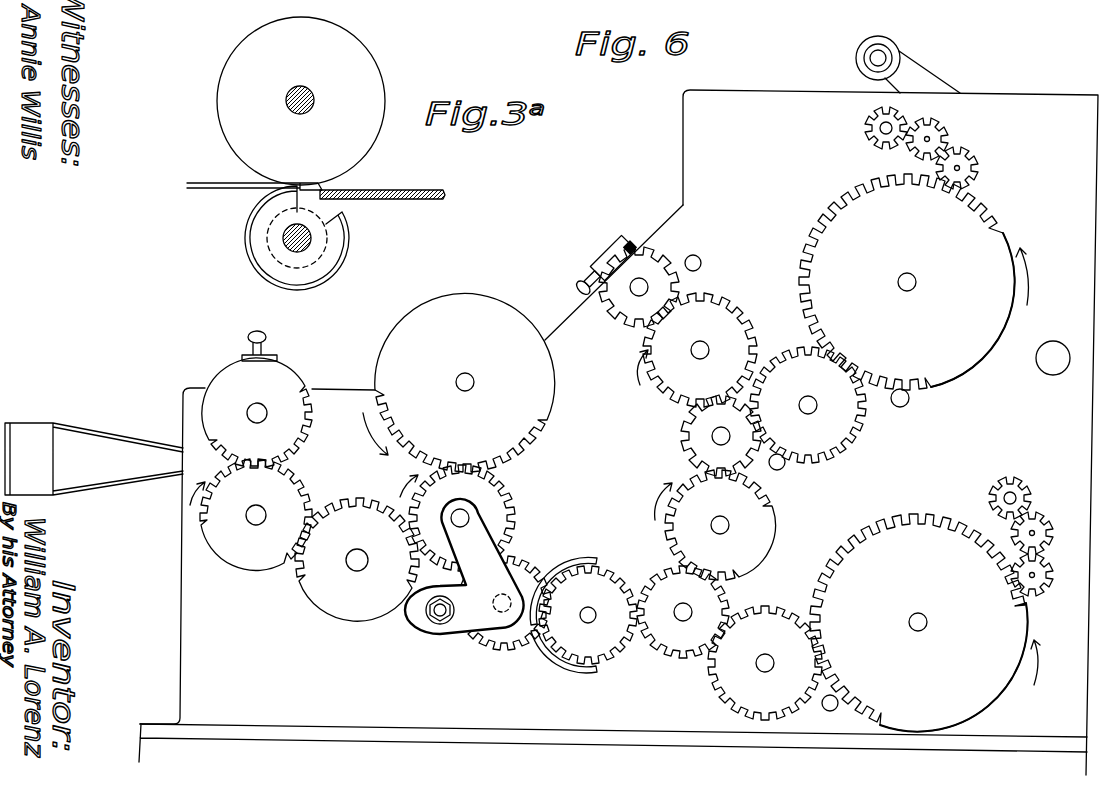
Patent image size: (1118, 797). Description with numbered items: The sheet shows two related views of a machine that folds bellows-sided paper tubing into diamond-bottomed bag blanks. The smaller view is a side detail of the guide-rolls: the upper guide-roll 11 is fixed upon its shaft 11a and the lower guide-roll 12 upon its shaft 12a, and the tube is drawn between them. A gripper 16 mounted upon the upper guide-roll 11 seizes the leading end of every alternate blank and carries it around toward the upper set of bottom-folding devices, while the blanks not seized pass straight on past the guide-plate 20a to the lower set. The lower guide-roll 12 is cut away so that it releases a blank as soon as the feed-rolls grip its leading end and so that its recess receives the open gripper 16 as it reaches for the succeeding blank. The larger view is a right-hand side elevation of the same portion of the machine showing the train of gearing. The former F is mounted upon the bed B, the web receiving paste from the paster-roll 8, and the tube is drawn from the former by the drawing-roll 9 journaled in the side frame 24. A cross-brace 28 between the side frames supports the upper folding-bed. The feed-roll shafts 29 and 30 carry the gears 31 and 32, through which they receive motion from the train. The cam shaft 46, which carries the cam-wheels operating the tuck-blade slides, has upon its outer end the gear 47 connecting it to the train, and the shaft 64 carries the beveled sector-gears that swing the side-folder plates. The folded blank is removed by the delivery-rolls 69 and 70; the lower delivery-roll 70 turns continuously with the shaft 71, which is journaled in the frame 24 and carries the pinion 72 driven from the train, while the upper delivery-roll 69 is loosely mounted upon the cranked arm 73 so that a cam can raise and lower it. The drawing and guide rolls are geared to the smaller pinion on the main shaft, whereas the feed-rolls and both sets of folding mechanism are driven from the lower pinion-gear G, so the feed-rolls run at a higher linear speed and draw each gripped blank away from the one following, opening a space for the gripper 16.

In FIG. 3A, the upper guide-roll 11 is at (301, 101).
In FIG. 3A, the guide-roll shaft 11a is at (314, 98).
In FIG. 6, the guide-roll shaft 11a is at (471, 380).
In FIG. 3A, the lower guide-roll 12 is at (262, 263).
In FIG. 3A, the guide-roll shaft 12a is at (292, 237).
In FIG. 6, the guide-roll shaft 12a is at (469, 516).
In FIG. 3A, the gripper 16 is at (318, 185).
In FIG. 3A, the guide-plate 20a is at (396, 198).
In FIG. 6, the side frame 24 is at (619, 432).
In FIG. 6, the cross-brace 28 is at (1049, 372).
In FIG. 6, the feed-roll shaft 29 is at (722, 419).
In FIG. 6, the feed-roll shaft 30 is at (728, 509).
In FIG. 6, the gear 31 is at (681, 373).
In FIG. 6, the gear 32 is at (709, 436).
In FIG. 6, the cam shaft 46 is at (935, 622).
In FIG. 6, the gear 47 is at (910, 693).
In FIG. 6, the shaft 64 is at (778, 470).
In FIG. 6, the upper delivery-roll 69 is at (895, 50).
In FIG. 6, the lower delivery-roll 70 is at (992, 498).
In FIG. 6, the delivery-roll shaft 71 is at (1043, 500).
In FIG. 6, the pinion 72 is at (1016, 488).
In FIG. 6, the cranked arm 73 is at (922, 72).
In FIG. 6, the paster-roll 8 is at (591, 620).
In FIG. 6, the drawing-roll 9 is at (563, 656).
In FIG. 6, the pinion-gear G is at (621, 574).
In FIG. 6, the former F is at (94, 459).
In FIG. 6, the bed B is at (613, 747).